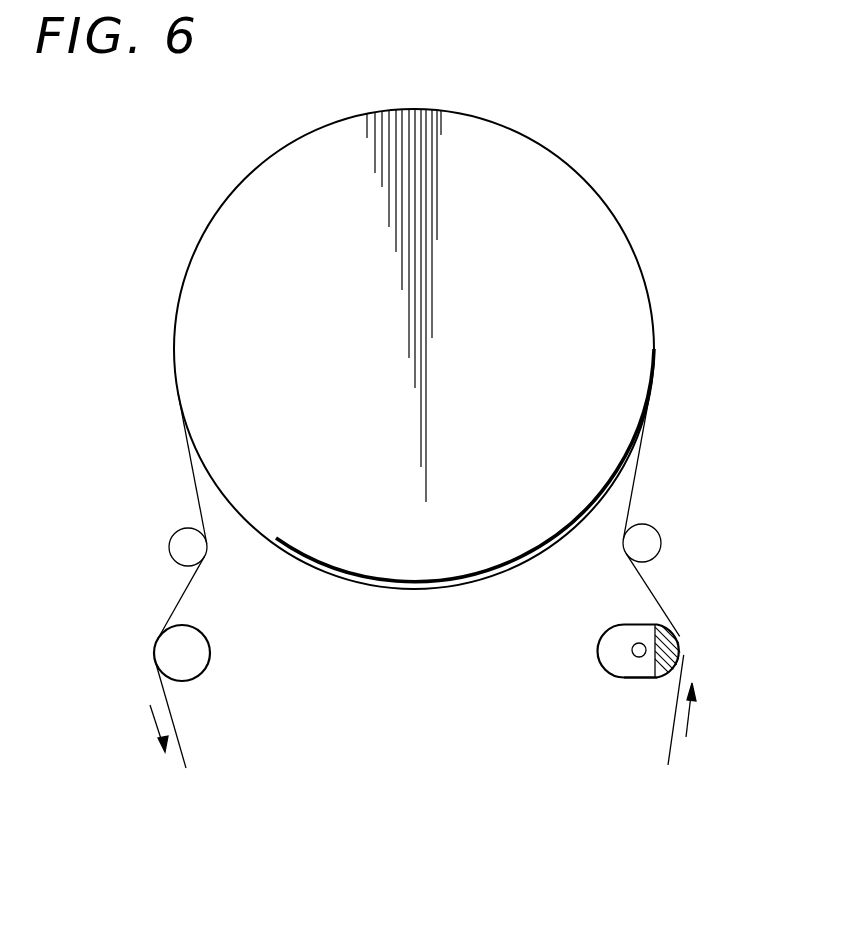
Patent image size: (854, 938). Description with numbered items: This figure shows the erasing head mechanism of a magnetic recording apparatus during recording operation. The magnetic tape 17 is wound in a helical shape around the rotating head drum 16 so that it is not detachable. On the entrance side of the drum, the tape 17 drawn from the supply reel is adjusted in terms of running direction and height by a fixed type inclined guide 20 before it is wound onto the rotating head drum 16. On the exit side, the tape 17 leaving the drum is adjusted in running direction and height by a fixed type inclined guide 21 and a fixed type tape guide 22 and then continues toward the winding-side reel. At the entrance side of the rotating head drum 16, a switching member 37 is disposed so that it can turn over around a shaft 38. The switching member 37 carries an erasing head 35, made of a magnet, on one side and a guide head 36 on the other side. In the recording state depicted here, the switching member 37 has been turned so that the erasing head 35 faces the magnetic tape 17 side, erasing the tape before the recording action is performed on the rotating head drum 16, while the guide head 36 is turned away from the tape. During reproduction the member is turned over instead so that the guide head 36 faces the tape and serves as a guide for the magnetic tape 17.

The rotating head drum 16 is at (420, 590).
The magnetic tape 17 is at (633, 490).
The fixed type inclined guide 20 is at (652, 540).
The fixed type inclined guide 21 is at (183, 545).
The fixed type tape guide 22 is at (168, 652).
The erasing head 35 is at (668, 652).
The guide head 36 is at (597, 655).
The switching member 37 is at (632, 680).
The shaft 38 is at (639, 643).